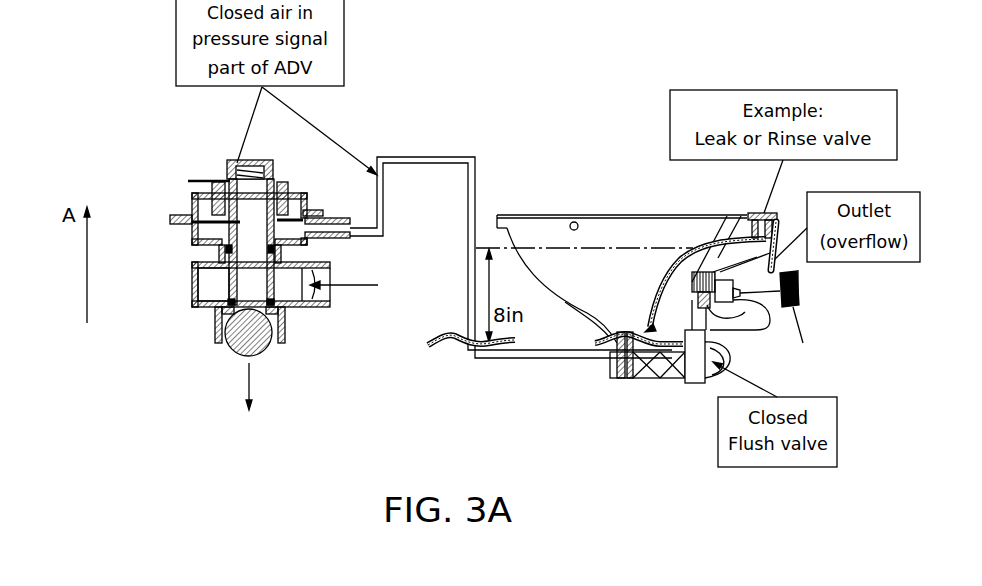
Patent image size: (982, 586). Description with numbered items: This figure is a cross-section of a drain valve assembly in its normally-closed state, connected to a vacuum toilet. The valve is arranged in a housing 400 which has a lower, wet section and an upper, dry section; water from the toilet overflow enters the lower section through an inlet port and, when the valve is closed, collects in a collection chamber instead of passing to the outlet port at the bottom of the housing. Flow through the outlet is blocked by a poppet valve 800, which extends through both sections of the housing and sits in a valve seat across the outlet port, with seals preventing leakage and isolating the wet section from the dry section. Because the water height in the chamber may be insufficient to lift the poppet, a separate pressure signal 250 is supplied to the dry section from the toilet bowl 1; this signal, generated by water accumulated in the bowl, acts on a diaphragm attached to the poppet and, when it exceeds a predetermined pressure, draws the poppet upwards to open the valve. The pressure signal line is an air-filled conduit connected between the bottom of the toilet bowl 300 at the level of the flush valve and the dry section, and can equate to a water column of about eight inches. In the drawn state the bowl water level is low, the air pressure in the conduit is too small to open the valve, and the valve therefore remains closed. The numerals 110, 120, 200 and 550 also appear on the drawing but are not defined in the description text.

The toilet bowl 1 is at (592, 223).
The lower valve housing 110 is at (196, 275).
The upper valve housing 120 is at (196, 231).
The water inlet 200 is at (348, 291).
The pressure signal 250 is at (378, 195).
The toilet bowl 300 is at (285, 343).
The housing 400 is at (212, 283).
The valve stem 550 is at (247, 200).
The poppet valve 800 is at (242, 344).